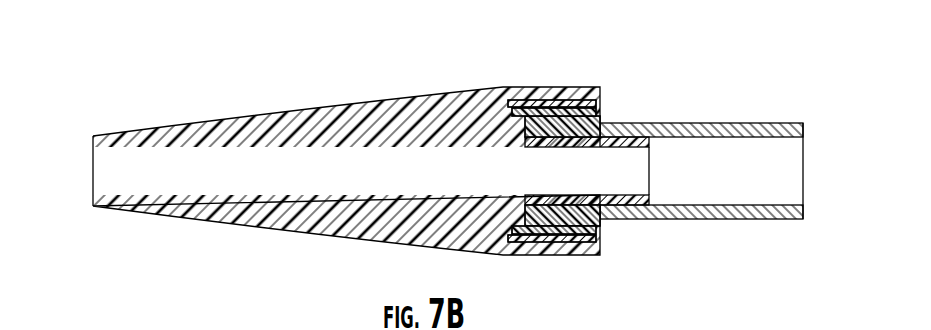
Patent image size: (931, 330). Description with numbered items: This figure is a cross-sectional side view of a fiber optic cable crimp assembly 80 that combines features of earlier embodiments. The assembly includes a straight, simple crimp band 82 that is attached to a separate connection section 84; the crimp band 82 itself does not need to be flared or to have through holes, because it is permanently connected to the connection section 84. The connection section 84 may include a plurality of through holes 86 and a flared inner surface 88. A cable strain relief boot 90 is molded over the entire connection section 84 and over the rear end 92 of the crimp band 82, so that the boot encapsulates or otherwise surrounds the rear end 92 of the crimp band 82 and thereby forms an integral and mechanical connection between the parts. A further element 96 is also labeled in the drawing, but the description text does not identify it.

The fiber optic cable crimp assembly 80 is at (665, 36).
The crimp band 82 is at (715, 122).
The connection section 84 is at (518, 88).
The through holes 86 is at (585, 88).
The flared inner surface 88 is at (537, 126).
The cable strain relief boot 90 is at (313, 109).
The rear end 92 is at (600, 125).
The connector 96 is at (235, 329).